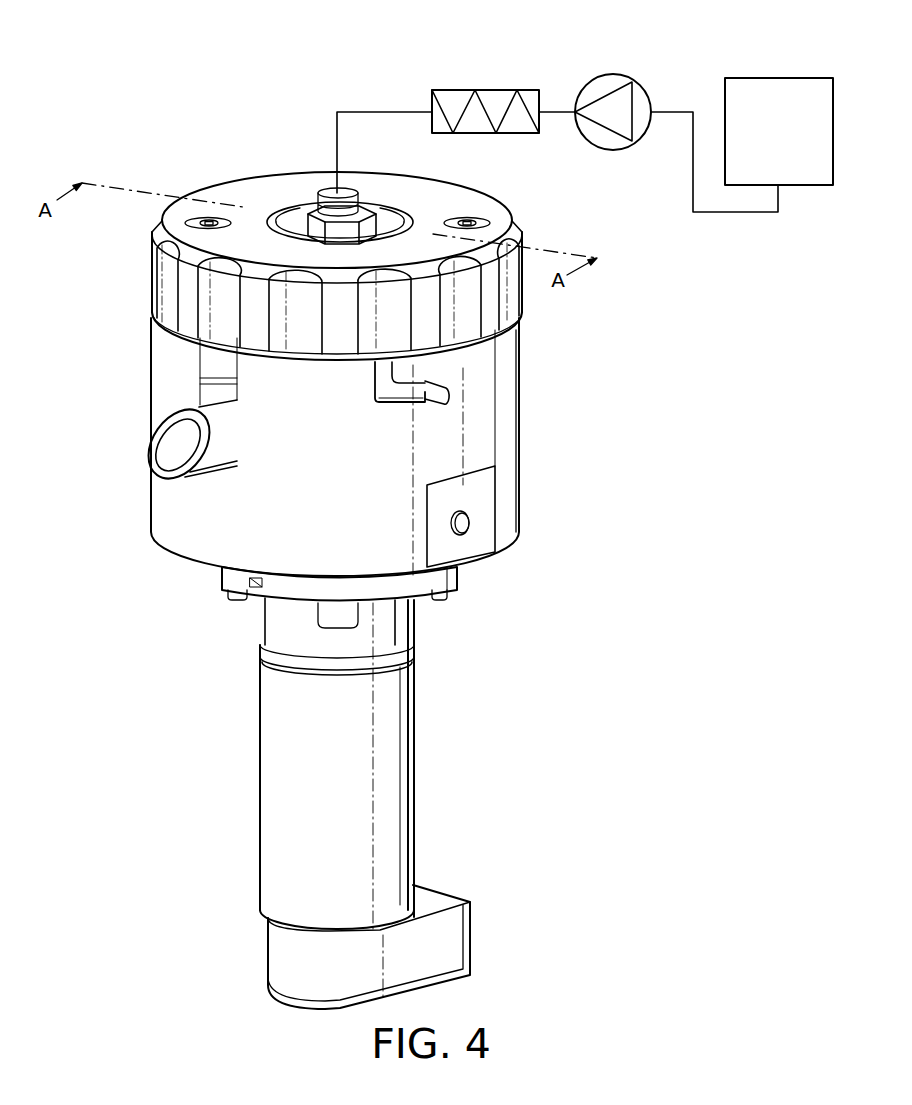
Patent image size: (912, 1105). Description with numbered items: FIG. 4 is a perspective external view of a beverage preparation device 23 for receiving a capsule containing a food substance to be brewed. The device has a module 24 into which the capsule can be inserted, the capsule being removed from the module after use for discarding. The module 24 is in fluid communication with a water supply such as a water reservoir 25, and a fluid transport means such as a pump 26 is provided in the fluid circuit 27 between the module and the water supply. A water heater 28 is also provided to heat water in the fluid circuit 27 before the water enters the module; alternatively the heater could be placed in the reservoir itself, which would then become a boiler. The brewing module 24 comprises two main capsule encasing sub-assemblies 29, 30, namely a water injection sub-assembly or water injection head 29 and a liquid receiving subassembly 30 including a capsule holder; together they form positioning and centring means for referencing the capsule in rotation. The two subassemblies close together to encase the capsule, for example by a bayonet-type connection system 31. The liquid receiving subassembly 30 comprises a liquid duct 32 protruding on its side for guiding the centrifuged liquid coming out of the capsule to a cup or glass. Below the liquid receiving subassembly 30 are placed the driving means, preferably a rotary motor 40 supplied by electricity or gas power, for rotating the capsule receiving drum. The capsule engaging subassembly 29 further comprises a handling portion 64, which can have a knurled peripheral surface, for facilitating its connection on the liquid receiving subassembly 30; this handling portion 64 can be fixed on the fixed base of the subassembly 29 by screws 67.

The beverage preparation device 23 is at (658, 532).
The module 24 is at (530, 392).
The water reservoir 25 is at (777, 78).
The pump 26 is at (611, 73).
The fluid circuit 27 is at (383, 108).
The water heater 28 is at (486, 90).
The water injection sub-assembly 29 is at (128, 208).
The liquid receiving subassembly 30 is at (128, 313).
The bayonet-type connection system 31 is at (455, 408).
The liquid duct 32 is at (190, 478).
The rotary motor 40 is at (433, 778).
The handling portion 64 is at (210, 171).
The screws 67 is at (478, 212).